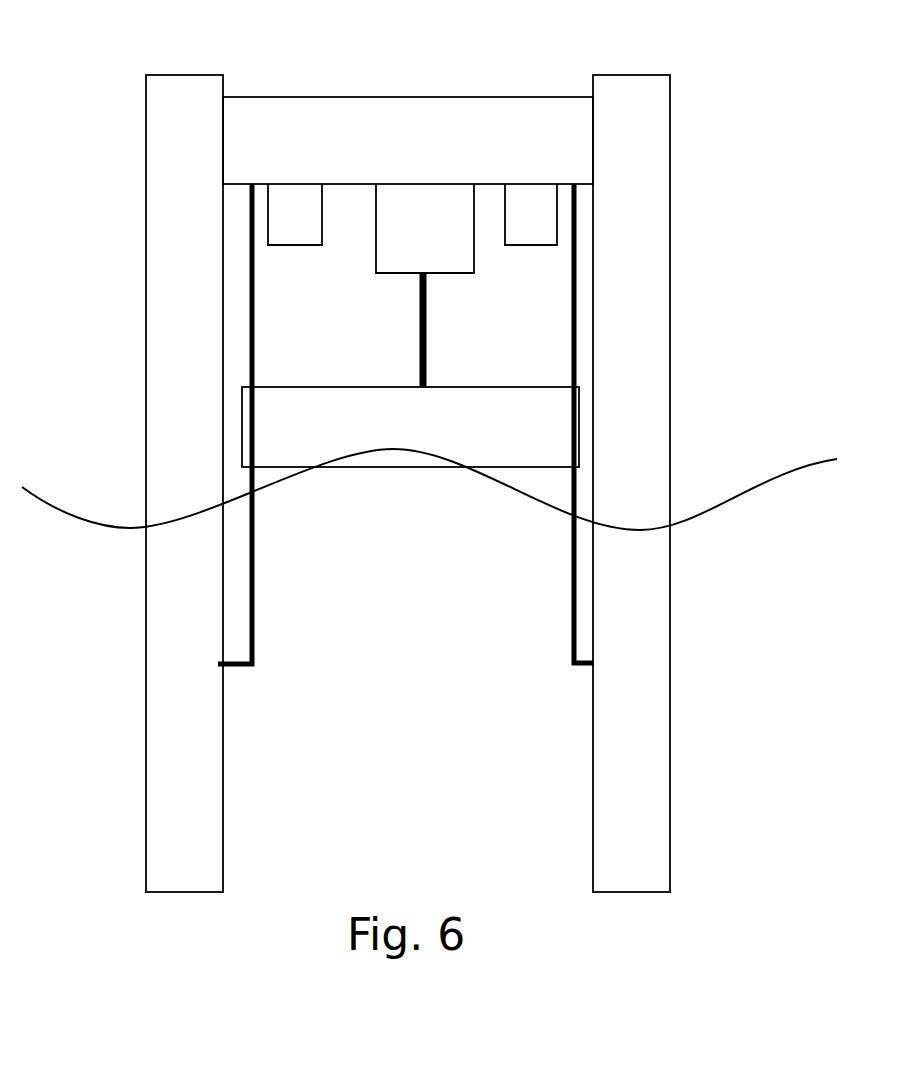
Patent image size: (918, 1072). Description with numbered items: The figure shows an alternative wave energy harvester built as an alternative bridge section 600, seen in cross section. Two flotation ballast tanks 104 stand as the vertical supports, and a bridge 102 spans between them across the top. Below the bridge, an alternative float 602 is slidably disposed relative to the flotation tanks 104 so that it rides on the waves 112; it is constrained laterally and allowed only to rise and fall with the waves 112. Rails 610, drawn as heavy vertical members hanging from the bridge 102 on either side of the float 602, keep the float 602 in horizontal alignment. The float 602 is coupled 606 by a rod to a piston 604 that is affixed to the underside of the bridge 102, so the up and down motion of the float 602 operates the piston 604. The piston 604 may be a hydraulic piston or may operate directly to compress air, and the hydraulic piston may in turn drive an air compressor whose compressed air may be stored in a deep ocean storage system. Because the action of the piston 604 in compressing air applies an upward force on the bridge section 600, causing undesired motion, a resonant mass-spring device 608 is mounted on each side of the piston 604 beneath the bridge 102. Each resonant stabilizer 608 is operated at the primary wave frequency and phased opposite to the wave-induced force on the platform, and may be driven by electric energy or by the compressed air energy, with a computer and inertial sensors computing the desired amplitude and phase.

The flotation ballast tanks 104 is at (160, 73).
The bridge 102 is at (346, 97).
The resonant mass-spring device 608 is at (303, 243).
The piston 604 is at (476, 265).
The coupling 606 is at (425, 315).
The float 602 is at (385, 386).
The rails 610 is at (257, 550).
The waves 112 is at (95, 527).
The alternative bridge section 600 is at (186, 950).